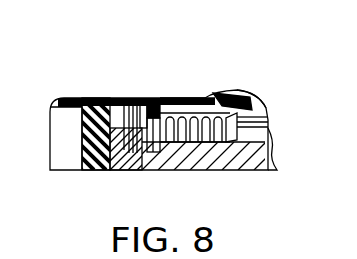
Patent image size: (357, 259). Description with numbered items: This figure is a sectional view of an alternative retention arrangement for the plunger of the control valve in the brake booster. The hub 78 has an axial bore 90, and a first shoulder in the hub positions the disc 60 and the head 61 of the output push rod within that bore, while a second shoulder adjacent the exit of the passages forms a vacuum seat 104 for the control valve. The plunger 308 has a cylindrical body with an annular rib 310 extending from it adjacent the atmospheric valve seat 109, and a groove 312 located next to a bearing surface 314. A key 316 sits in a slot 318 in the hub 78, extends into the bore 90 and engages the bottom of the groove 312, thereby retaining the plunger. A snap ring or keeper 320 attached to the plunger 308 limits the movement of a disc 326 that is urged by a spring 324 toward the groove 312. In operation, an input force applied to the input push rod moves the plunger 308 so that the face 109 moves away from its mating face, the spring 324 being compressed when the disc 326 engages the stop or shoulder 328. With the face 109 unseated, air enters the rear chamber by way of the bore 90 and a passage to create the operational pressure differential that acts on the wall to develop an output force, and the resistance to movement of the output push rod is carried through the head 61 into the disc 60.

The disc 60 is at (88, 165).
The head 61 is at (50, 126).
The hub 78 is at (195, 97).
The axial bore 90 is at (180, 113).
The vacuum seat 104 is at (258, 100).
The atmospheric valve seat 109 is at (268, 124).
The plunger 308 is at (206, 165).
The annular rib 310 is at (273, 113).
The groove 312 is at (128, 172).
The bearing surface 314 is at (120, 122).
The key 316 is at (126, 112).
The slot 318 is at (141, 100).
The snap ring or keeper 320 is at (173, 168).
The spring 324 is at (208, 95).
The disc 326 is at (168, 112).
The stop or shoulder 328 is at (160, 157).